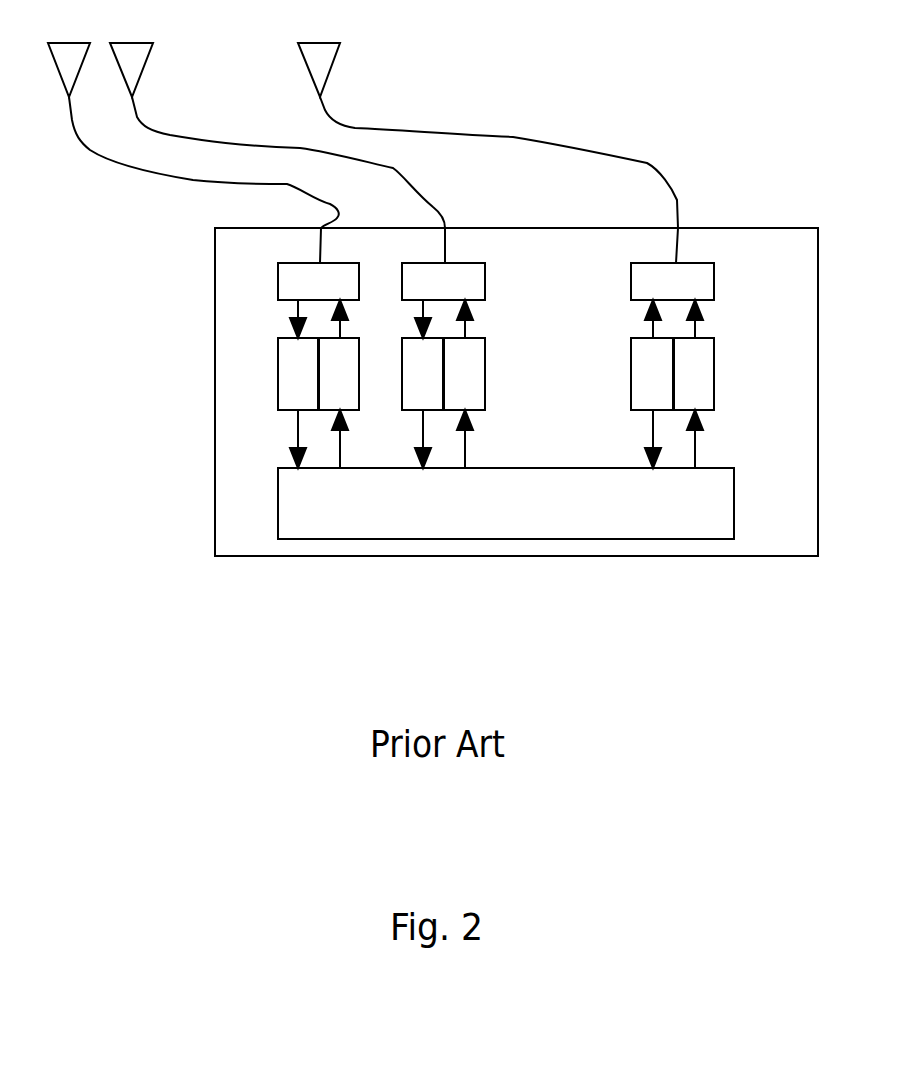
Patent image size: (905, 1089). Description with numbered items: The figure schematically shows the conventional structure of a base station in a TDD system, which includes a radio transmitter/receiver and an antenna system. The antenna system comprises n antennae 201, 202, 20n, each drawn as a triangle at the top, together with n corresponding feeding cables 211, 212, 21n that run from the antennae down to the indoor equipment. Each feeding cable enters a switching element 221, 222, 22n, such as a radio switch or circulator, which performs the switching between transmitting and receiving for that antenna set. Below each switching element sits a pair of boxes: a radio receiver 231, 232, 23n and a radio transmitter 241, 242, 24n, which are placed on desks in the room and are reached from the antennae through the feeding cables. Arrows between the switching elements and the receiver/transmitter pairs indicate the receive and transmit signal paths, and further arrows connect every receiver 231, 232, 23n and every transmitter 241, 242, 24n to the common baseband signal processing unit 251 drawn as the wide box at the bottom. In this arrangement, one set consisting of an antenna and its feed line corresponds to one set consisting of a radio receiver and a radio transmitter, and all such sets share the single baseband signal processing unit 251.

The antenna 201 is at (69, 58).
The antenna 202 is at (131, 58).
The antenna 20n is at (319, 58).
The feeding cable 211 is at (188, 180).
The feeding cable 212 is at (285, 180).
The feeding cable 21n is at (499, 180).
The switching element 221 is at (318, 281).
The switching element 222 is at (443, 281).
The switching element 22n is at (672, 281).
The radio receiver 231 is at (298, 374).
The radio receiver 232 is at (422, 374).
The radio receiver 23n is at (652, 374).
The radio transmitter 241 is at (339, 374).
The radio transmitter 242 is at (464, 374).
The radio transmitter 24n is at (694, 374).
The baseband signal processing unit 251 is at (506, 503).